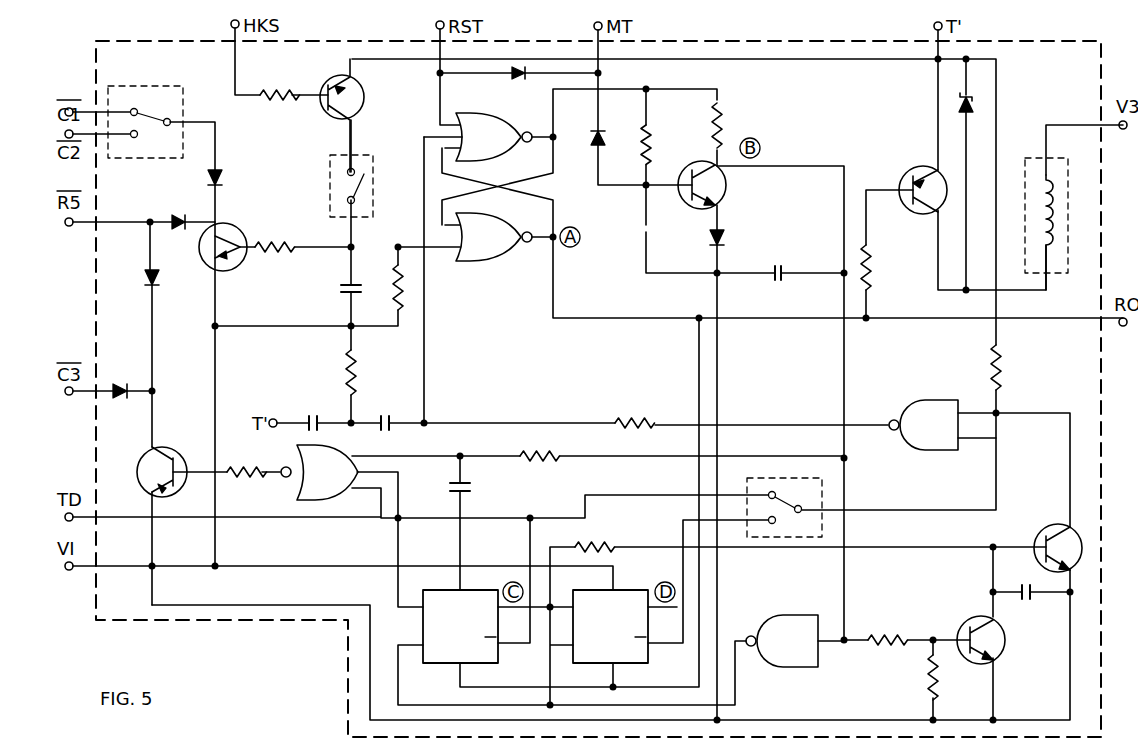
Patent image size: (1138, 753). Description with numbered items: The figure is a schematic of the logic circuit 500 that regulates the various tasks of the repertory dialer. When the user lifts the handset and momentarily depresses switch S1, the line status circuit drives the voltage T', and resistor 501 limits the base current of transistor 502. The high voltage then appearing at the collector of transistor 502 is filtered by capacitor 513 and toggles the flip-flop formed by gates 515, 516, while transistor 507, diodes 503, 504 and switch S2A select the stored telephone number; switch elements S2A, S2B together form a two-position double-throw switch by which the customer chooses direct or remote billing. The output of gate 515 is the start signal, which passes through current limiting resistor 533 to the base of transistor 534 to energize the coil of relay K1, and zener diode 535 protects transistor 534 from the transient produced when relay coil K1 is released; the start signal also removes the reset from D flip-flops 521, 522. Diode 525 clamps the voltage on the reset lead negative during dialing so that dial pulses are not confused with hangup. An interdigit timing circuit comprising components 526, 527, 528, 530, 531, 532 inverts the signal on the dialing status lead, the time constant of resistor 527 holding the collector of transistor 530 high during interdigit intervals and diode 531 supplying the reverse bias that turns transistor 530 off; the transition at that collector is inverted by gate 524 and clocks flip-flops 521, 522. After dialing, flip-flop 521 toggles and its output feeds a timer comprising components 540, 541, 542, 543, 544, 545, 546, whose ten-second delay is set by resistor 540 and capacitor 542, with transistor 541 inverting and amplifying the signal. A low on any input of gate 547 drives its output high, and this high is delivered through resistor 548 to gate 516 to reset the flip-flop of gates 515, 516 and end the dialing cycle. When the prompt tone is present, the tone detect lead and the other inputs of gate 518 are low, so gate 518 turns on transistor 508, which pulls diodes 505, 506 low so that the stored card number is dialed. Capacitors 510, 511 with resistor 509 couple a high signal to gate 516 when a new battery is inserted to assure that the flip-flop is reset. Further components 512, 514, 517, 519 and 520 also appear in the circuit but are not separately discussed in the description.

The control circuit 500 is at (795, 41).
The resistor 501 is at (273, 102).
The transistor 502 is at (328, 82).
The diode 503 is at (224, 177).
The diode 504 is at (172, 216).
The diode 505 is at (158, 286).
The diode 506 is at (118, 386).
The transistor 507 is at (236, 232).
The transistor 508 is at (190, 460).
The resistor 509 is at (345, 364).
The capacitor 510 is at (306, 410).
The capacitor 511 is at (384, 412).
The resistor 512 is at (286, 257).
The capacitor 513 is at (340, 291).
The resistor 514 is at (394, 271).
The gate 515 is at (496, 263).
The gate 516 is at (493, 117).
The OR gate 517 is at (240, 478).
The gate 518 is at (284, 464).
The resistor 519 is at (528, 452).
The capacitor 520 is at (471, 488).
The D flip-flop 521 is at (447, 668).
The D flip-flop 522 is at (649, 664).
The gate 524 is at (802, 615).
The diode 525 is at (514, 78).
The interdigit timing circuit component 526 is at (597, 150).
The resistor 527 is at (651, 152).
The interdigit timing circuit component 528 is at (712, 118).
The transistor 530 is at (730, 186).
The diode 531 is at (726, 237).
The interdigit timing circuit component 532 is at (781, 268).
The current limiting resistor 533 is at (873, 270).
The transistor 534 is at (918, 170).
The zener diode 535 is at (952, 105).
The resistor 540 is at (615, 541).
The transistor 541 is at (1050, 527).
The capacitor 542 is at (1025, 600).
The timer component 543 is at (1000, 656).
The timer component 544 is at (890, 630).
The timer component 545 is at (926, 672).
The timer component 546 is at (1002, 375).
The gate 547 is at (926, 400).
The resistor 548 is at (618, 420).
The switch S1 is at (330, 158).
The switch element S2A is at (130, 88).
The switch element S2B is at (797, 478).
The relay K1 is at (1055, 276).